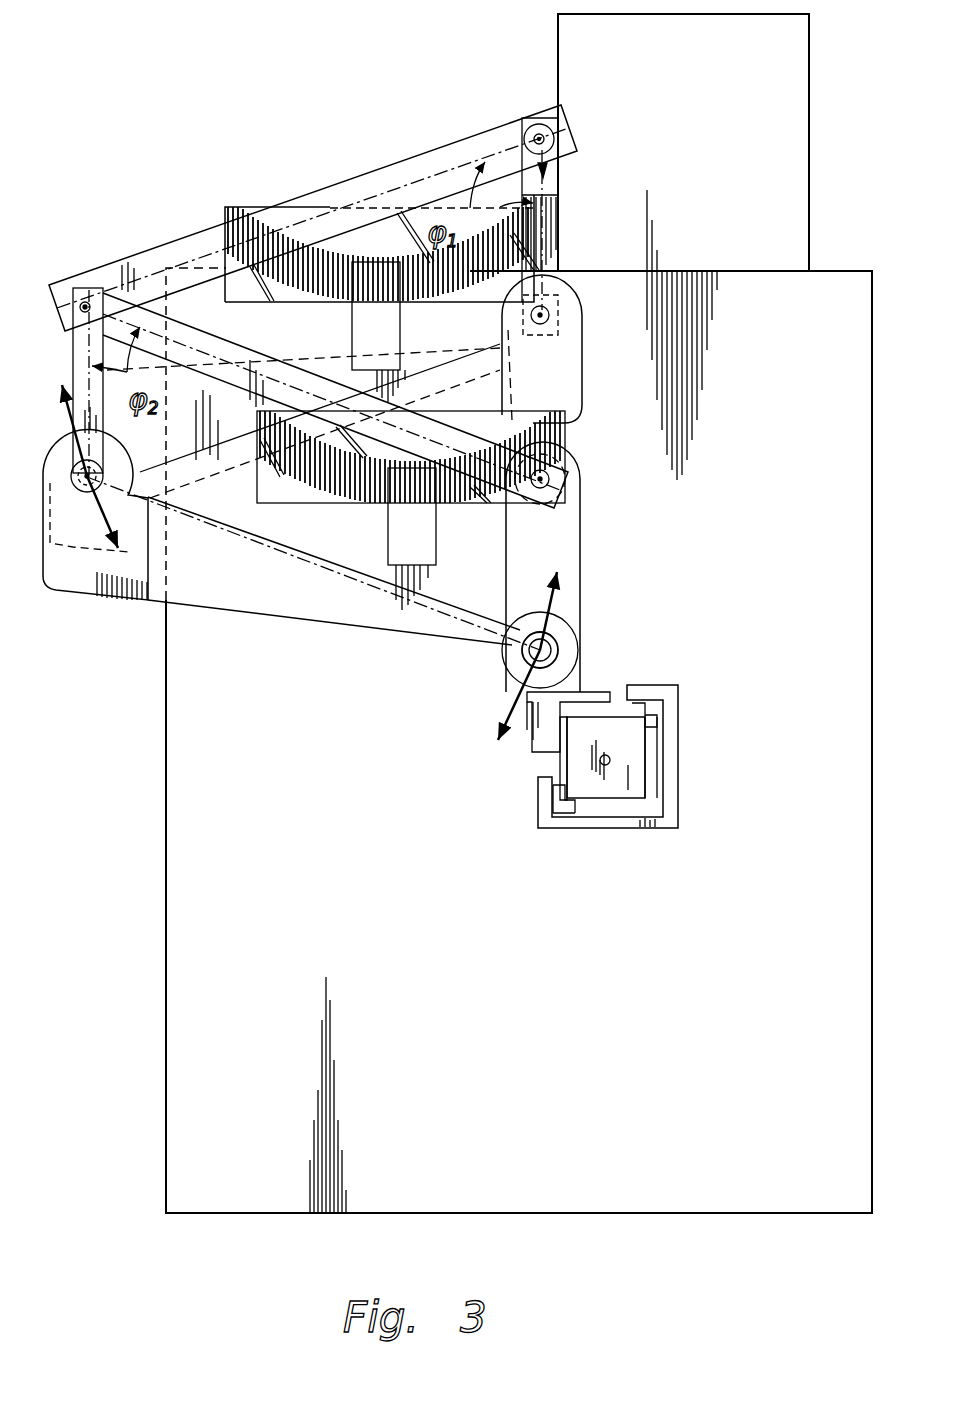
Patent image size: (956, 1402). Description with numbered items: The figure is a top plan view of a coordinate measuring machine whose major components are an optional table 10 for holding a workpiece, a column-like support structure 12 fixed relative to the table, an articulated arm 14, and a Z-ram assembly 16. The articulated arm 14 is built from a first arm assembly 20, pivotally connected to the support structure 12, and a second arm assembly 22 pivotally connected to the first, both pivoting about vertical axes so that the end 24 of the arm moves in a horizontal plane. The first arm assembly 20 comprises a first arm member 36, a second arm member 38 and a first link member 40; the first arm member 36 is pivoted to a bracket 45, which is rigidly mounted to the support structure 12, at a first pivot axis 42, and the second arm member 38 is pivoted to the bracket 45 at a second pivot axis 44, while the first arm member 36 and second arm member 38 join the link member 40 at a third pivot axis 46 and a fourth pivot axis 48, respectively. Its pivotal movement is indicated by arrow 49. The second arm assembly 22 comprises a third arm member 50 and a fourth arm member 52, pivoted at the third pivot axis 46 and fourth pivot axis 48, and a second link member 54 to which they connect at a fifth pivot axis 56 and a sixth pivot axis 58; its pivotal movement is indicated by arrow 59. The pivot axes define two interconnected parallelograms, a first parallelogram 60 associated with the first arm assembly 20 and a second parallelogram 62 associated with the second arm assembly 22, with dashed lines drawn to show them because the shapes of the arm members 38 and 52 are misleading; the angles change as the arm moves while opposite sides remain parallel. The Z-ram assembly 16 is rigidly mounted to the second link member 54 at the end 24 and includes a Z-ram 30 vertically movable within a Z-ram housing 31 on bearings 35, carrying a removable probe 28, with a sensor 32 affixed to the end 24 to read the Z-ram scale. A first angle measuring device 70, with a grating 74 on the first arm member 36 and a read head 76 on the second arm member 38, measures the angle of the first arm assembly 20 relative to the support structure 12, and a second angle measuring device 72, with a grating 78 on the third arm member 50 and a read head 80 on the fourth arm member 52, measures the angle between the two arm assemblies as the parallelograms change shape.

The table 10 is at (524, 1062).
The support structure 12 is at (694, 127).
The articulated arm 14 is at (172, 187).
The Z-ram assembly 16 is at (687, 760).
The first arm assembly 20 is at (586, 373).
The second arm assembly 22 is at (290, 625).
The end of the articulated arm 24 is at (512, 675).
The probe 28 is at (612, 765).
The Z-ram 30 is at (623, 800).
The Z-ram housing 31 is at (680, 782).
The sensor 32 is at (530, 740).
The bearings 35 is at (623, 693).
The first arm member 36 is at (460, 142).
The second arm member 38 is at (587, 395).
The first link member 40 is at (73, 352).
The first pivot axis 42 is at (540, 123).
The second pivot axis 44 is at (552, 316).
The bracket 45 is at (560, 215).
The third pivot axis 46 is at (86, 299).
The fourth pivot axis 48 is at (77, 463).
The arrow 49 is at (87, 520).
The third arm member 50 is at (270, 358).
The fourth arm member 52 is at (342, 633).
The second link member 54 is at (582, 535).
The fifth pivot axis 56 is at (563, 478).
The sixth pivot axis 58 is at (560, 642).
The arrow 59 is at (560, 605).
The first parallelogram 60 is at (407, 183).
The second parallelogram 62 is at (263, 560).
The first angle measuring device 70 is at (373, 248).
The second angle measuring device 72 is at (440, 520).
The grating 74 is at (260, 206).
The read head 76 is at (352, 322).
The grating 78 is at (257, 483).
The read head 80 is at (388, 530).